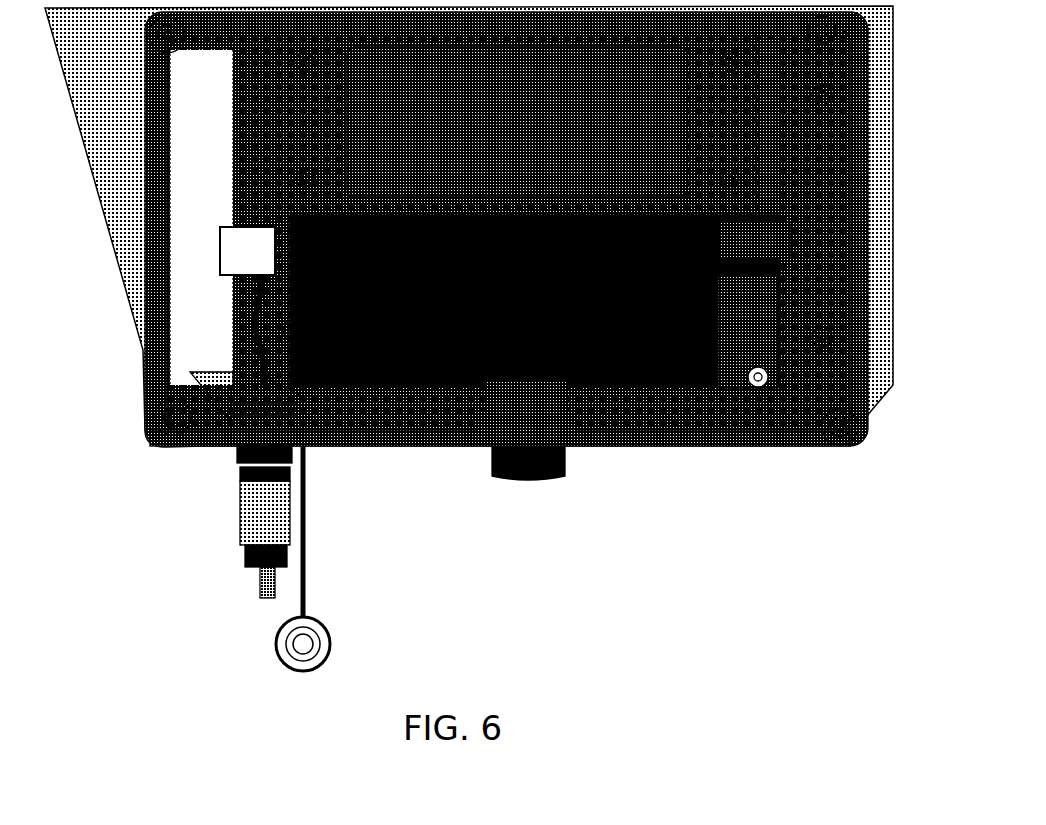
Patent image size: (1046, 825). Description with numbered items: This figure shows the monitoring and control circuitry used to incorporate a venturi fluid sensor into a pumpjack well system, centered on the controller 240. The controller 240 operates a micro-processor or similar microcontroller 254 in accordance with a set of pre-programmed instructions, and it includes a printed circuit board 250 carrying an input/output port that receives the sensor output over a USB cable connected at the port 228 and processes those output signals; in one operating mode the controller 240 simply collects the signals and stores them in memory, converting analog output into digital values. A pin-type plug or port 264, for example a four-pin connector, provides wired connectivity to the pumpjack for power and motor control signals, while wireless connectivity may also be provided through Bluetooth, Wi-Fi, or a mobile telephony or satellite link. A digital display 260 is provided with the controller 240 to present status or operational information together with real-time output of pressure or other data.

The port 228 is at (522, 483).
The controller 240 is at (662, 450).
The printed circuit board 250 is at (765, 390).
The microcontroller 254 is at (585, 266).
The digital display 260 is at (342, 126).
The pin-type plug or port 264 is at (260, 583).